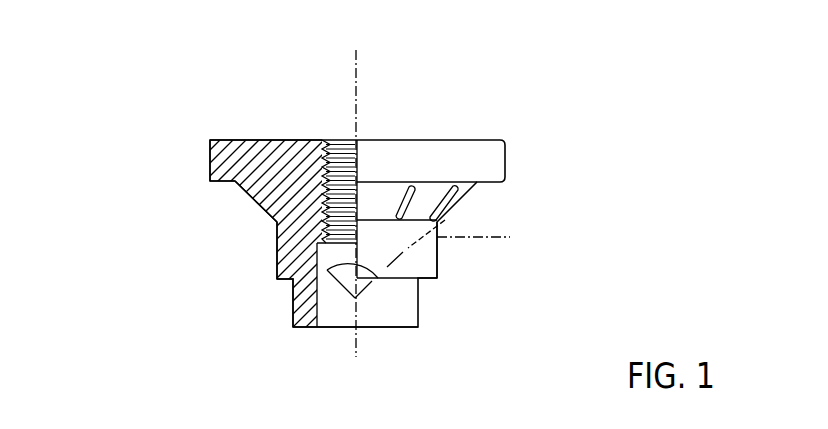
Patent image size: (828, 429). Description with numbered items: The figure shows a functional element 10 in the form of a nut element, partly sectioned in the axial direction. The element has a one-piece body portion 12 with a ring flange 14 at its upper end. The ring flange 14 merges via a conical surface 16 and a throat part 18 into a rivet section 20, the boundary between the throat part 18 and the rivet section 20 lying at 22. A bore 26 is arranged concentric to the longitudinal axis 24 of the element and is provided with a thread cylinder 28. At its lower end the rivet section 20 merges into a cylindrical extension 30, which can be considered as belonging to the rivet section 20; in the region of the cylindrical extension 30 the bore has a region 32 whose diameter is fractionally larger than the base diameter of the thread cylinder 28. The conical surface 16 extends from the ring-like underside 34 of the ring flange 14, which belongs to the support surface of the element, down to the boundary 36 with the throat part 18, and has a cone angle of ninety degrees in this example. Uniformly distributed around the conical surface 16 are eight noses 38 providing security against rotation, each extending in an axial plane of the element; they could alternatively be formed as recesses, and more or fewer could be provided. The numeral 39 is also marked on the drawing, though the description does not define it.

The functional element 10 is at (195, 138).
The body portion 12 is at (228, 150).
The ring flange 14 is at (208, 167).
The conical surface 16 is at (273, 218).
The throat part 18 is at (440, 224).
The rivet section 20 is at (277, 265).
The boundary between throat part and rivet section 22 is at (448, 238).
The longitudinal axis 24 is at (355, 65).
The bore 26 is at (367, 150).
The thread cylinder 28 is at (330, 148).
The cylindrical extension 30 is at (290, 322).
The bore region 32 is at (336, 315).
The ring-like underside 34 is at (227, 183).
The boundary to throat part 36 is at (407, 220).
The noses providing security against rotation 38 is at (414, 184).
The pin / bar 39 is at (477, 138).